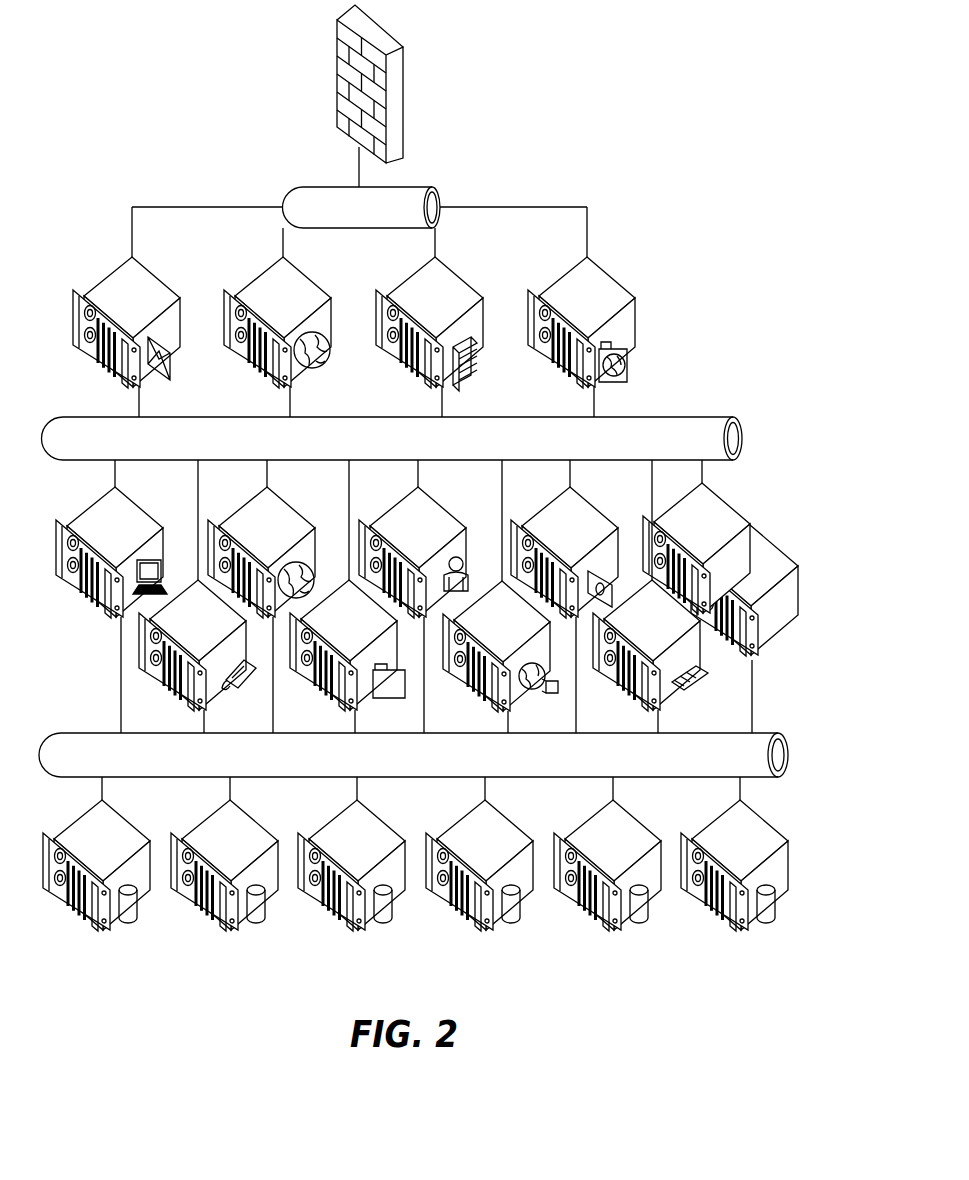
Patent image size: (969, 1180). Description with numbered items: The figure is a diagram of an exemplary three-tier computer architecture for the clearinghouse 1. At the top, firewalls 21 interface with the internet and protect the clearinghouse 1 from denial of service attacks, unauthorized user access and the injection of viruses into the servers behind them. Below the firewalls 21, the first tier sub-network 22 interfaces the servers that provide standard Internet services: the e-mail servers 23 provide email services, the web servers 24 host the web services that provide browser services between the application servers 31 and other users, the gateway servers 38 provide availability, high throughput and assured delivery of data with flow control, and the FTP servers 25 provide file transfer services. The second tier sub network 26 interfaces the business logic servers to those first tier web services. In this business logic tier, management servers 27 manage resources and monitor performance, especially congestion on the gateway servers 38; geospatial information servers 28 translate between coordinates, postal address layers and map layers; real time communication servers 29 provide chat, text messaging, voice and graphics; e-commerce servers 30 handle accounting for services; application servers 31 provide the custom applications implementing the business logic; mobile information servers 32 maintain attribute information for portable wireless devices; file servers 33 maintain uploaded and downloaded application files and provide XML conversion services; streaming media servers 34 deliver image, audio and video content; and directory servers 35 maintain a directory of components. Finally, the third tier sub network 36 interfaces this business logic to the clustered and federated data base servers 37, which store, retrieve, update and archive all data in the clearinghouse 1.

The clearinghouse 1 is at (593, 63).
The firewalls 21 is at (405, 99).
The first tier sub-network 22 is at (325, 186).
The e-mail servers 23 is at (112, 270).
The web servers 24 is at (268, 268).
The gateway servers 38 is at (418, 266).
The FTP servers 25 is at (570, 266).
The second tier sub network 26 is at (82, 417).
The management servers 27 is at (105, 500).
The geospatial information servers 28 is at (257, 500).
The real time communication servers 29 is at (408, 500).
The e-commerce servers 30 is at (558, 500).
The application servers 31 is at (720, 498).
The mobile information servers 32 is at (177, 688).
The file servers 33 is at (329, 688).
The streaming media servers 34 is at (480, 690).
The directory servers 35 is at (630, 690).
The third tier sub network 36 is at (82, 733).
The data base servers 37 is at (237, 931).